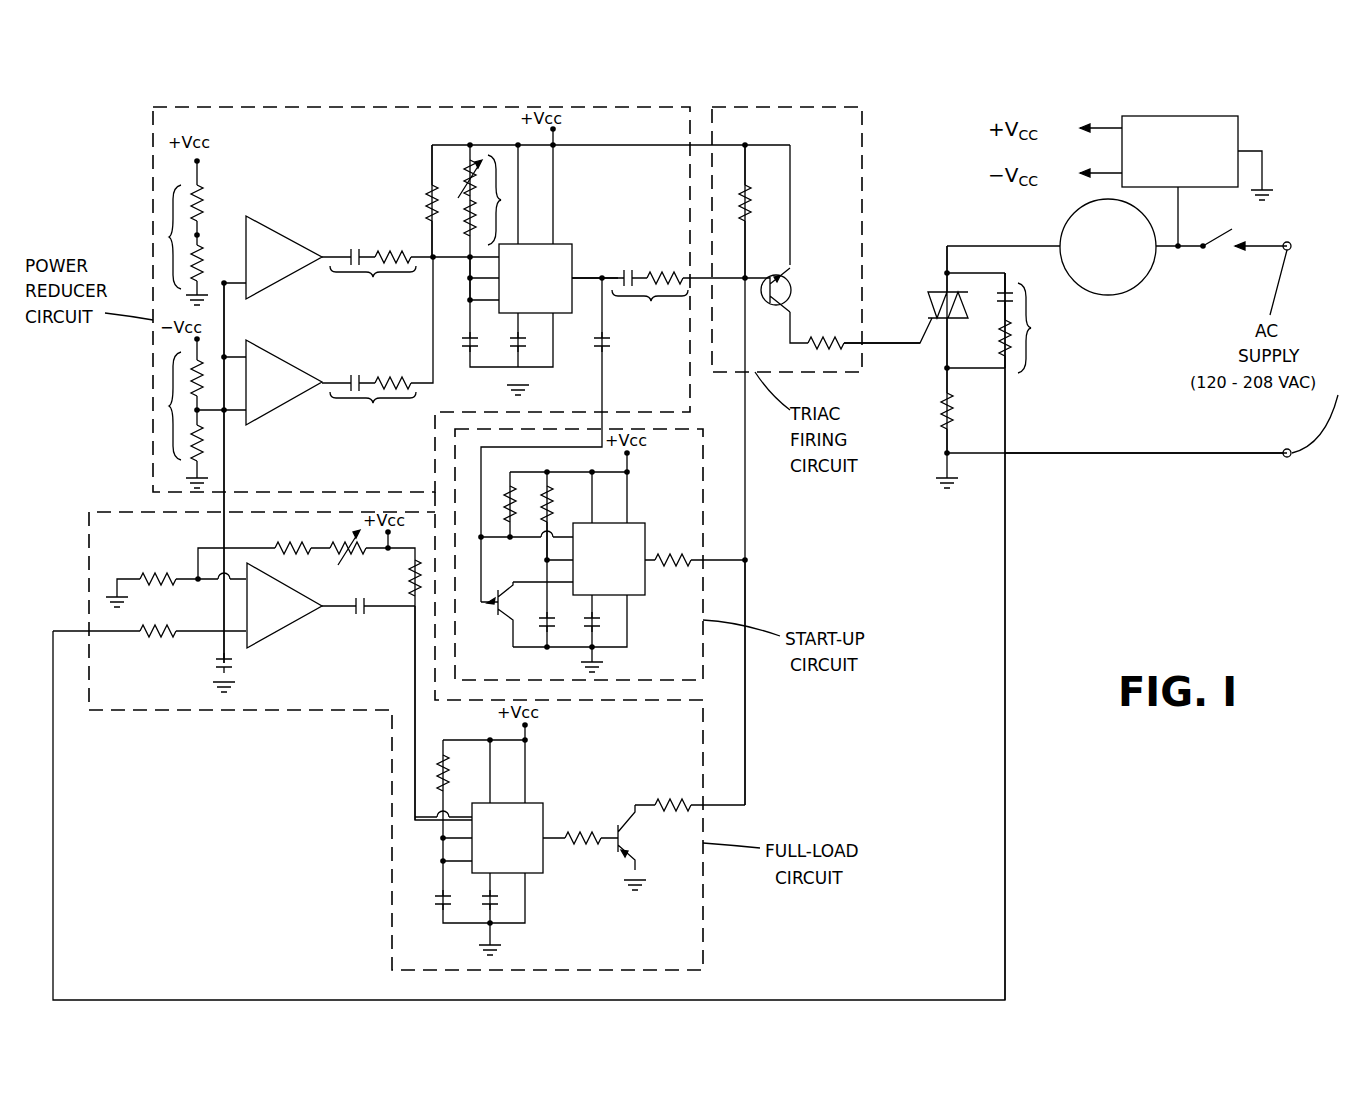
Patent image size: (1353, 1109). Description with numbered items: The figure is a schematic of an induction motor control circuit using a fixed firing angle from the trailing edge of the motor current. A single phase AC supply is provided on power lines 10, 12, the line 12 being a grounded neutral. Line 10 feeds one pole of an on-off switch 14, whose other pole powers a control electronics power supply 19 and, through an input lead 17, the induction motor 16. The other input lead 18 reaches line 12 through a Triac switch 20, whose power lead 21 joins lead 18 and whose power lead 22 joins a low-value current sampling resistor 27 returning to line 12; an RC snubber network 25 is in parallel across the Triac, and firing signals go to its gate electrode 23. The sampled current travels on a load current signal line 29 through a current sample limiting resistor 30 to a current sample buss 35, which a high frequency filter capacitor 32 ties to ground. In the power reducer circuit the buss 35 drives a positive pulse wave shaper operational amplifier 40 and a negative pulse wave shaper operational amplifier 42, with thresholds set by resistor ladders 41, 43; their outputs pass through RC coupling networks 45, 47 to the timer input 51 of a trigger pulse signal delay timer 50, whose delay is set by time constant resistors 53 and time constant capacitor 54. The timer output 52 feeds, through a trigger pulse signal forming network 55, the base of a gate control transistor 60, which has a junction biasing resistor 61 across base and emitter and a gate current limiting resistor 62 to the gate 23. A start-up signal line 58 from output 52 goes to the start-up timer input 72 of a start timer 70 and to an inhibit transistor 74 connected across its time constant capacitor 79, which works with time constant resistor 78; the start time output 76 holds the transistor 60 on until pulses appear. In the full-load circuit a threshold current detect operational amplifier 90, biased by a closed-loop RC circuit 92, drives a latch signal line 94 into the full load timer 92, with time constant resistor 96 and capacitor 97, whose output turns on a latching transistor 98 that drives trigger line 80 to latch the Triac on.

The power line 10 is at (1255, 240).
The power line 12 is at (1180, 456).
The on-off switch 14 is at (1222, 250).
The induction motor 16 is at (1120, 291).
The input lead 17 is at (1165, 252).
The input lead 18 is at (975, 240).
The control electronics power supply 19 is at (1180, 137).
The Triac switch 20 is at (947, 292).
The power lead 21 is at (947, 246).
The power lead 22 is at (947, 332).
The gate electrode 23 is at (883, 345).
The RC snubber network 25 is at (1031, 323).
The current sampling resistor 27 is at (955, 395).
The load current signal line 29 is at (1005, 760).
The current sample limiting resistor 30 is at (150, 637).
The high frequency filter capacitor 32 is at (235, 665).
The current sample buss 35 is at (226, 452).
The positive pulse wave shaper operational amplifier 40 is at (268, 227).
The positive threshold establishing resistor ladder 41 is at (172, 237).
The negative pulse wave shaper operational amplifier 42 is at (280, 362).
The negative threshold establishing resistor ladder 43 is at (172, 405).
The RC coupling network 45 is at (373, 277).
The RC coupling network 47 is at (373, 404).
The trigger pulse signal delay timer 50 is at (572, 253).
The timer input 51 is at (478, 258).
The timer output 52 is at (578, 275).
The time constant resistors 53 is at (500, 198).
The time constant capacitor 54 is at (468, 347).
The trigger pulse signal forming network 55 is at (650, 298).
The start-up signal line 58 is at (602, 378).
The gate control transistor 60 is at (770, 298).
The junction biasing resistor 61 is at (758, 200).
The gate current limiting resistor 62 is at (814, 340).
The start timer 70 is at (640, 523).
The start-up timer input 72 is at (552, 537).
The inhibit transistor 74 is at (492, 612).
The start time output 76 is at (672, 540).
The time constant resistor 78 is at (552, 490).
The time constant capacitor 79 is at (545, 626).
The trigger line 80 is at (745, 760).
The threshold current detect operational amplifier 90 is at (285, 628).
The full load timer 92 is at (377, 589).
The latch signal line 94 is at (415, 655).
The time constant resistor 96 is at (443, 770).
The time constant capacitor 97 is at (435, 897).
The latching transistor 98 is at (620, 850).